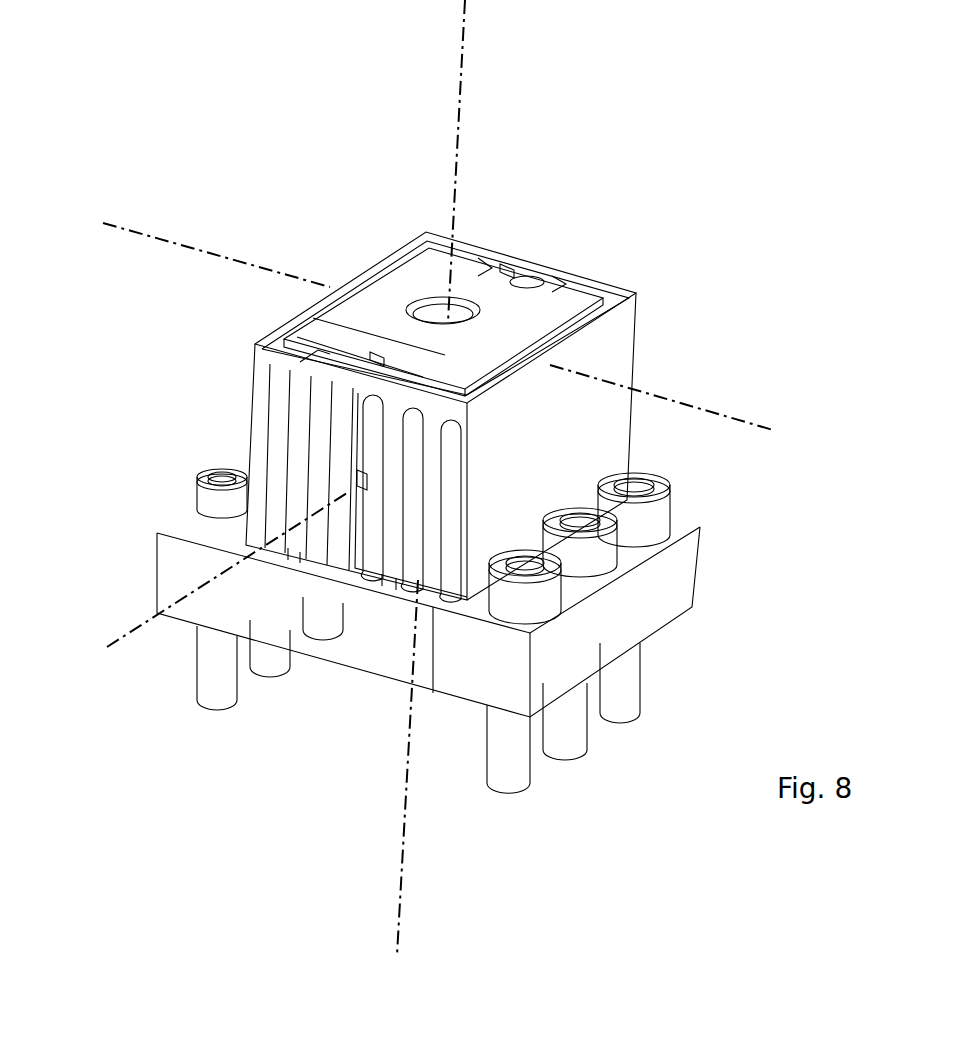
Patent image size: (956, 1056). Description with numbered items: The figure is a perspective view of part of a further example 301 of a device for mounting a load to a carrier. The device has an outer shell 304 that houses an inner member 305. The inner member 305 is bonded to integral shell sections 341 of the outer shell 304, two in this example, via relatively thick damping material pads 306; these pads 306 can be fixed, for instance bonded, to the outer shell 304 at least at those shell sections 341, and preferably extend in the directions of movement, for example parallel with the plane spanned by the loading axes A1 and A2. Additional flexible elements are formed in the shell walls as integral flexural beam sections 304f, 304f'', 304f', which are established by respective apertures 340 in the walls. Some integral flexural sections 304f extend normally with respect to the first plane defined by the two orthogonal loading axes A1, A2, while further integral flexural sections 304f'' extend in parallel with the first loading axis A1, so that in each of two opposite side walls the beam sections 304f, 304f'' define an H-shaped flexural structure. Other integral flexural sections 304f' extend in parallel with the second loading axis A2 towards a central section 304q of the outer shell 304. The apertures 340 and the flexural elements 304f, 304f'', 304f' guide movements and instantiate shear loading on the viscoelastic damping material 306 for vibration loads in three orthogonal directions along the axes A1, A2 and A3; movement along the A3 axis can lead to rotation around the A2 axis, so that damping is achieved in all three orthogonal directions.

The device for mounting a load to a carrier 301 is at (336, 170).
The outer shell 304 is at (258, 392).
The integral flexural beam section 304f is at (367, 431).
The integral flexural section 304f' is at (190, 522).
The integral flexural beam section 304f'' is at (506, 221).
The central section of the outer shell 304q is at (492, 301).
The inner member 305 is at (360, 353).
The damping material pad 306 is at (462, 362).
The aperture 340 is at (428, 383).
The integral shell section 341 is at (315, 325).
The first loading axis A1 is at (431, 486).
The second loading axis A2 is at (219, 587).
The third axis A3 is at (424, 307).